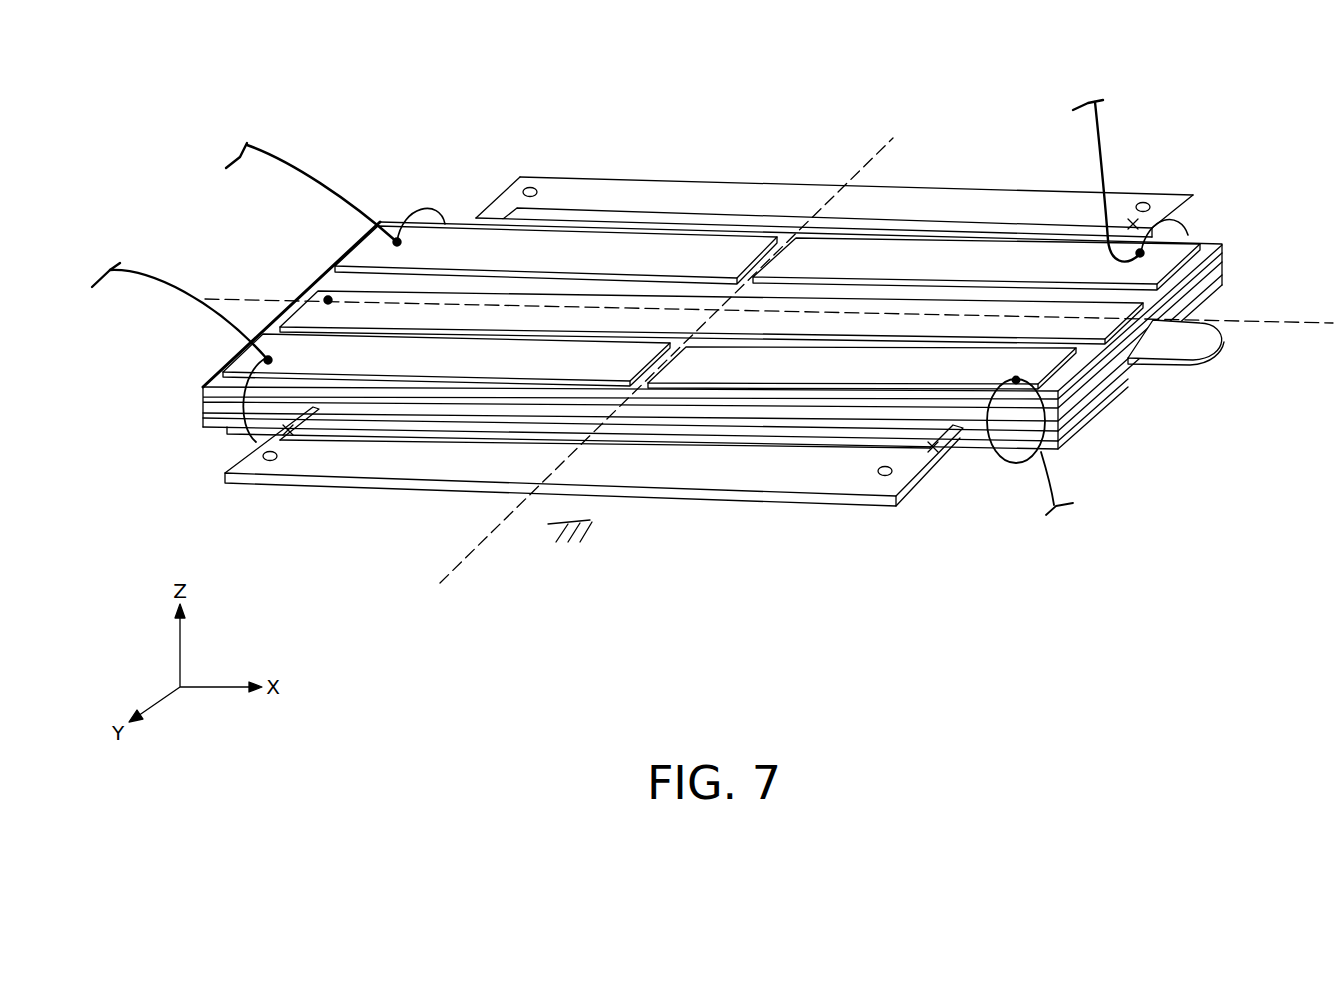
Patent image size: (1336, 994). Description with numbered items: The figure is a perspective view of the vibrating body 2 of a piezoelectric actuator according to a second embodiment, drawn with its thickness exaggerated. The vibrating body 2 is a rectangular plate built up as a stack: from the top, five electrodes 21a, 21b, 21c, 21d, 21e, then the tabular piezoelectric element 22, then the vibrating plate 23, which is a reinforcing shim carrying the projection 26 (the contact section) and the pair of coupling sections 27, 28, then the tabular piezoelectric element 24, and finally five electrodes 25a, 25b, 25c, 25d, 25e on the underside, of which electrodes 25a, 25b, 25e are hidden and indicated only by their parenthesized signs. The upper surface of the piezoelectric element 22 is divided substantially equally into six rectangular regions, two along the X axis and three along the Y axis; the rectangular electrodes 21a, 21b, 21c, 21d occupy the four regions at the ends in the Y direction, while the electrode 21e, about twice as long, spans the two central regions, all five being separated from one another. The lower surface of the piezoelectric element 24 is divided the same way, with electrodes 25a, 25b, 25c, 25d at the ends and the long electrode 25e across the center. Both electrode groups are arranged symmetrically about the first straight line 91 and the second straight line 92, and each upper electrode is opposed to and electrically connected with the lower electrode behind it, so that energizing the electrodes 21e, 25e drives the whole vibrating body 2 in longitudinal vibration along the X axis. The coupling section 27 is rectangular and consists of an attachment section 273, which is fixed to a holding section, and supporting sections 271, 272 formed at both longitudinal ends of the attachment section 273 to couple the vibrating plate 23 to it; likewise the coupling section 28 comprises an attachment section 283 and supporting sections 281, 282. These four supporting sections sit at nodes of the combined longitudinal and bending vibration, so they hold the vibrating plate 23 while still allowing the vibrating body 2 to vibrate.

The vibrating body 2 is at (956, 178).
The electrode 21a is at (985, 258).
The electrode 21b is at (628, 253).
The electrode 21c is at (377, 353).
The electrode 21d is at (873, 367).
The electrode 21e is at (532, 296).
The piezoelectric element 22 is at (820, 412).
The vibrating plate 23 is at (765, 425).
The piezoelectric element 24 is at (713, 433).
The electrode 25a is at (1163, 181).
The electrode 25b is at (350, 194).
The electrode 25c is at (447, 437).
The electrode 25d is at (958, 452).
The electrode 25e is at (328, 300).
The projection 26 is at (1178, 342).
The coupling section 27 is at (834, 158).
The supporting section 271 is at (1128, 216).
The supporting section 272 is at (494, 198).
The attachment section 273 is at (748, 205).
The coupling section 28 is at (594, 494).
The supporting section 281 is at (934, 450).
The supporting section 282 is at (295, 442).
The attachment section 283 is at (523, 465).
The first straight line 91 is at (452, 582).
The second straight line 92 is at (1283, 326).